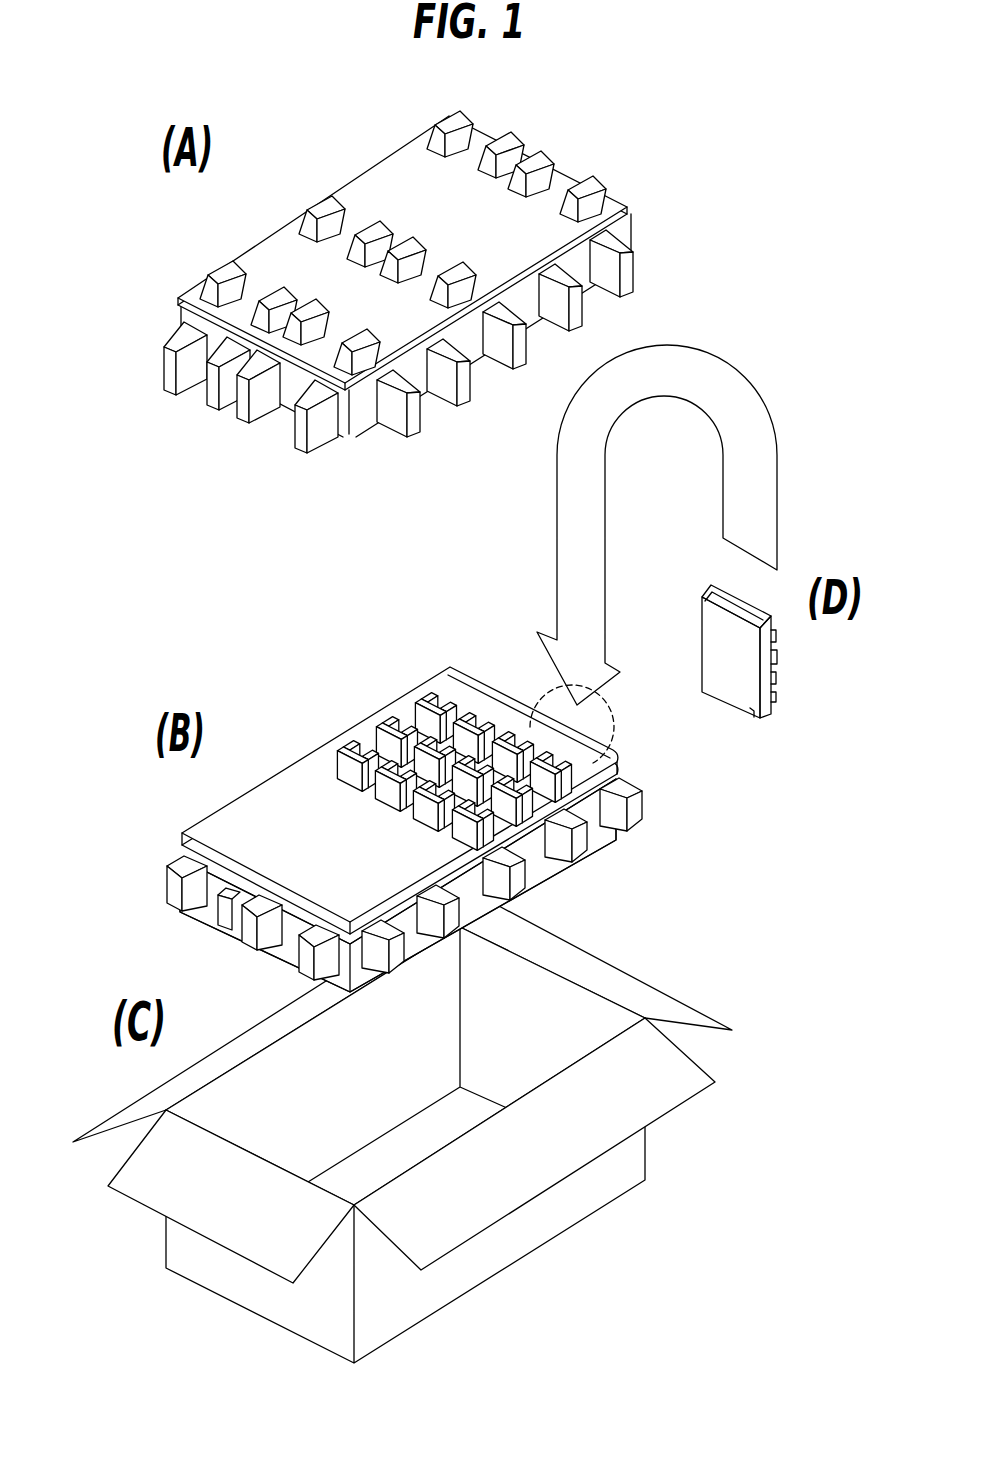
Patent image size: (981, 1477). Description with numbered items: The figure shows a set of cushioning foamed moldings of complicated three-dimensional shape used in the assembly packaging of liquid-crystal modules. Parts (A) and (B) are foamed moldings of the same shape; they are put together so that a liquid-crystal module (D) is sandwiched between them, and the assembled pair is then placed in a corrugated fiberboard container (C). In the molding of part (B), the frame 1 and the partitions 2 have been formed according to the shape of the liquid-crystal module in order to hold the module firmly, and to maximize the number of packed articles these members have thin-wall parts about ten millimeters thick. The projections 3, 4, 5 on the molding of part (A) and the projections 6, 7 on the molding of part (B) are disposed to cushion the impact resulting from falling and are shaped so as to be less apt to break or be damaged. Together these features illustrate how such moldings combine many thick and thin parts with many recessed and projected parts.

The frame 1 is at (487, 683).
The partitions 2 is at (433, 762).
The projection 3 is at (448, 408).
The projection 4 is at (325, 453).
The projection 5 is at (314, 185).
The projection 6 is at (587, 858).
The projection 7 is at (148, 888).